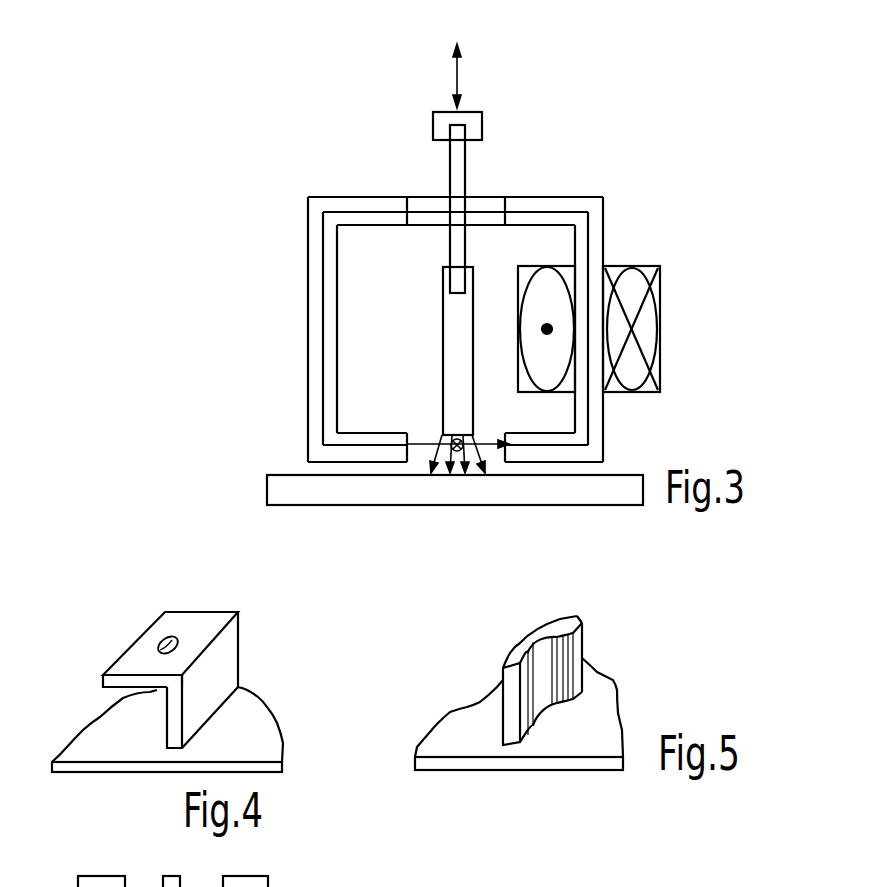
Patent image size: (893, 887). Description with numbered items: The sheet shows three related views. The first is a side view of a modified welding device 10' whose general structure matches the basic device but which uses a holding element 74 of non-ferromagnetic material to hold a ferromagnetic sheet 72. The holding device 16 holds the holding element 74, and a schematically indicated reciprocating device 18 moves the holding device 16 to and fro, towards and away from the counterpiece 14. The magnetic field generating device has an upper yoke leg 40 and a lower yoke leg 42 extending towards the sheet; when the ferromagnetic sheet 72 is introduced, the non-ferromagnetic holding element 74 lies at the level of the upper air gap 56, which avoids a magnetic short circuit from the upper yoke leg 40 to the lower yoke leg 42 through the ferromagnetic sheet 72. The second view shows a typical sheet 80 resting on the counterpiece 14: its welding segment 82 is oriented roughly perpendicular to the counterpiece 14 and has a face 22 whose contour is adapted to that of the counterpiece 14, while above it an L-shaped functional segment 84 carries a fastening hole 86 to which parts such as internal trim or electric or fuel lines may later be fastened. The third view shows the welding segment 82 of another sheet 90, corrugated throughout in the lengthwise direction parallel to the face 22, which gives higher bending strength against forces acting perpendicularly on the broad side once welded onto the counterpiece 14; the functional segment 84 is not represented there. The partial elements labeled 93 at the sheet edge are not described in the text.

In FIG. 3, the welding device 10' is at (757, 145).
In FIG. 3, the counterpiece 14 is at (392, 495).
In FIG. 4, the counterpiece 14 is at (132, 767).
In FIG. 5, the counterpiece 14 is at (532, 762).
In FIG. 3, the holding device 16 is at (443, 120).
In FIG. 3, the reciprocating device 18 is at (460, 77).
In FIG. 4, the face 22 is at (217, 722).
In FIG. 3, the upper yoke leg 40 is at (565, 202).
In FIG. 3, the lower yoke leg 42 is at (550, 453).
In FIG. 3, the upper air gap 56 is at (424, 203).
In FIG. 3, the ferromagnetic sheet 72 is at (457, 341).
In FIG. 3, the holding element 74 is at (460, 178).
In FIG. 4, the sheet 80 is at (158, 637).
In FIG. 4, the welding segment 82 is at (253, 650).
In FIG. 5, the welding segment 82 is at (490, 743).
In FIG. 4, the functional segment 84 is at (253, 607).
In FIG. 4, the fastening hole 86 is at (172, 637).
In FIG. 5, the sheet 90 is at (563, 645).
In FIG. 4, the contacts 93 is at (211, 879).